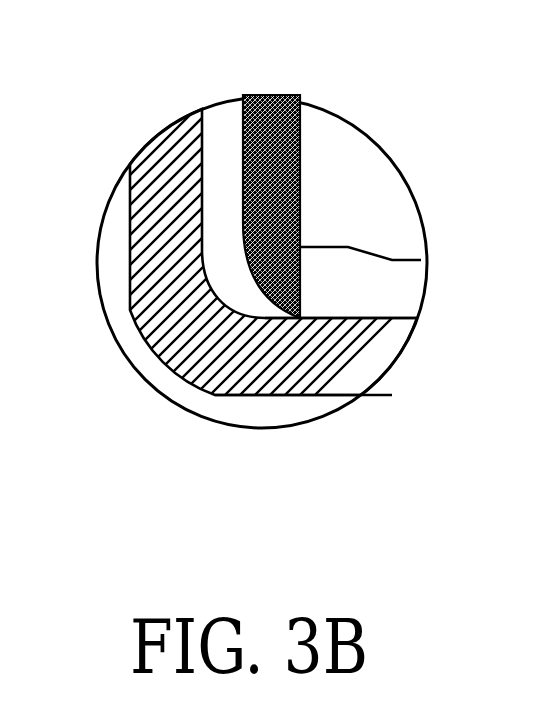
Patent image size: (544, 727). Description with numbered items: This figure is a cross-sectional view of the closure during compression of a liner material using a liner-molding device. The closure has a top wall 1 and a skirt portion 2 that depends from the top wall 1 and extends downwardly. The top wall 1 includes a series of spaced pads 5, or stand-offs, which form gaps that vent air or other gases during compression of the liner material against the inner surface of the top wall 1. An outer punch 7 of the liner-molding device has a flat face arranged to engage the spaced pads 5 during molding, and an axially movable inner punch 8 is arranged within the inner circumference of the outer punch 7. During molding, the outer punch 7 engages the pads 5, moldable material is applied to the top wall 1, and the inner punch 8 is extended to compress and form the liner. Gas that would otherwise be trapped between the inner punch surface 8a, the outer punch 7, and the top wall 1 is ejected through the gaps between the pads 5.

The top wall 1 is at (253, 395).
The skirt portion 2 is at (135, 318).
The pads 5 is at (283, 318).
The outer punch 7 is at (260, 95).
The inner punch 8 is at (341, 188).
The inner punch surface 8a is at (348, 246).